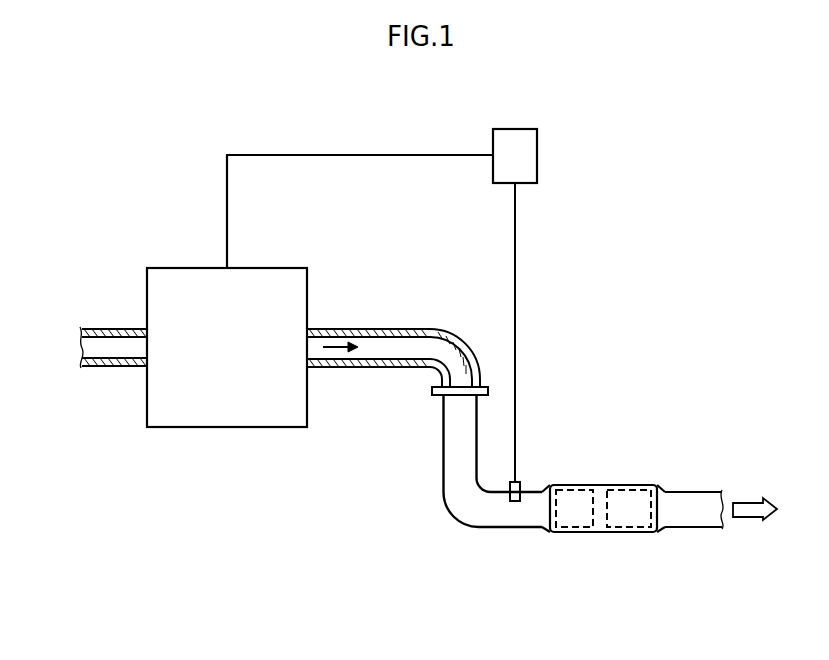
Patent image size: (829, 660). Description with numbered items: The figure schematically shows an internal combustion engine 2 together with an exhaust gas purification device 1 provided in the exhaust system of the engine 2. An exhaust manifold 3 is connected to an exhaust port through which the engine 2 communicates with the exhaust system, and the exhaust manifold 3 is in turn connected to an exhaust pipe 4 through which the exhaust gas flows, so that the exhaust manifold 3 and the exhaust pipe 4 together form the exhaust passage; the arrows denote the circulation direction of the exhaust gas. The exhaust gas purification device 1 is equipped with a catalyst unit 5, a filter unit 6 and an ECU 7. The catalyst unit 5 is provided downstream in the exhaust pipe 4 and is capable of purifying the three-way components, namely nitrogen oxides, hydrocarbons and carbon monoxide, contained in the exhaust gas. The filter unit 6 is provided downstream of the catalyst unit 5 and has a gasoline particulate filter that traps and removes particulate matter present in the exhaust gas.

The exhaust gas purification device 1 is at (572, 533).
The internal combustion engine 2 is at (287, 259).
The exhaust manifold 3 is at (397, 327).
The exhaust pipe 4 is at (441, 438).
The catalyst unit 5 is at (578, 482).
The filter unit 6 is at (628, 482).
The ECU 7 is at (540, 145).